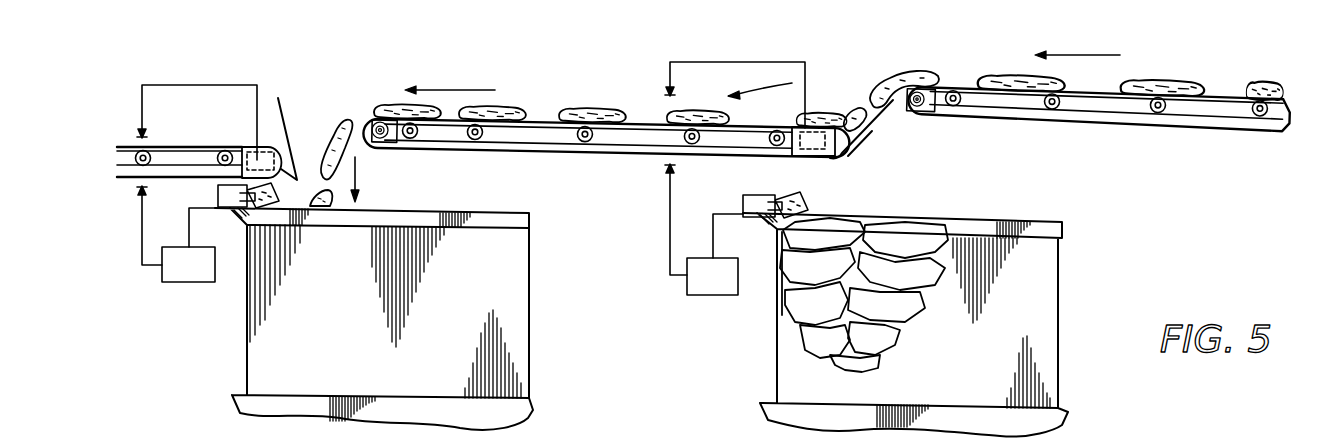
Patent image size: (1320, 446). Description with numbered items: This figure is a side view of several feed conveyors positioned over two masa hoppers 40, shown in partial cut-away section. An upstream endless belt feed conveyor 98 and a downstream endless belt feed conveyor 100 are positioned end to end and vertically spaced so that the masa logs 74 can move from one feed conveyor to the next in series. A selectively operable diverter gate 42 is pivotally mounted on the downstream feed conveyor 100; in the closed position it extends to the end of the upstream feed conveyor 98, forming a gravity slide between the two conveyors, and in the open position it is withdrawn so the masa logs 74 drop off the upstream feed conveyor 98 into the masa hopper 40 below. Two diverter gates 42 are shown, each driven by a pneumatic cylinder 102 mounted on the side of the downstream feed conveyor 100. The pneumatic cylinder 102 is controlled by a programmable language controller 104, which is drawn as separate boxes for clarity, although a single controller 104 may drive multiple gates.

The masa hopper 40 is at (529, 291).
The diverter gate 42 is at (283, 117).
The masa log 74 is at (1163, 75).
The upstream endless belt feed conveyor 98 is at (1098, 128).
The downstream endless belt feed conveyor 100 is at (570, 158).
The pneumatic cylinder 102 is at (256, 147).
The programmable language controller 104 is at (190, 283).